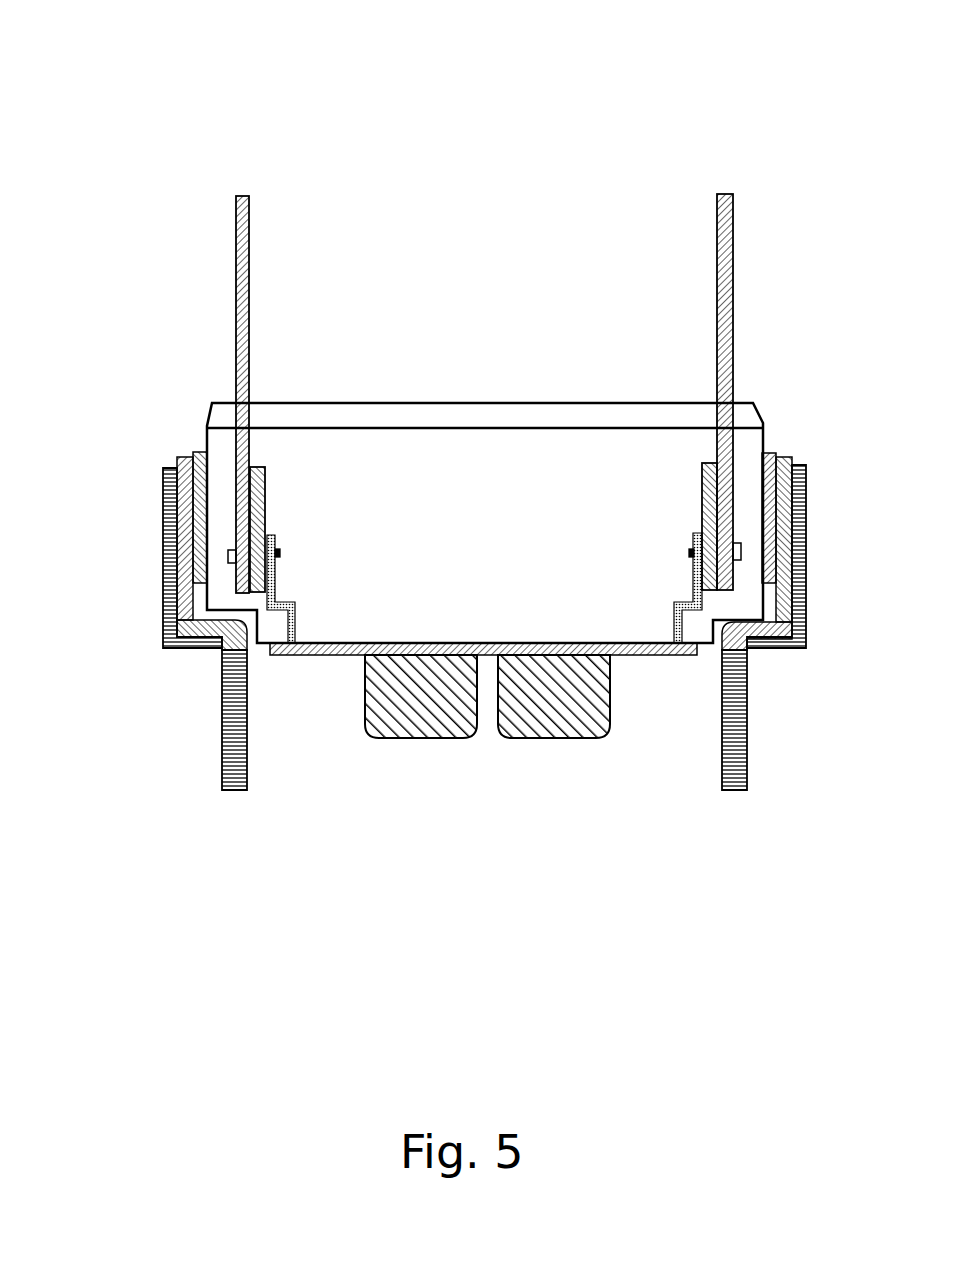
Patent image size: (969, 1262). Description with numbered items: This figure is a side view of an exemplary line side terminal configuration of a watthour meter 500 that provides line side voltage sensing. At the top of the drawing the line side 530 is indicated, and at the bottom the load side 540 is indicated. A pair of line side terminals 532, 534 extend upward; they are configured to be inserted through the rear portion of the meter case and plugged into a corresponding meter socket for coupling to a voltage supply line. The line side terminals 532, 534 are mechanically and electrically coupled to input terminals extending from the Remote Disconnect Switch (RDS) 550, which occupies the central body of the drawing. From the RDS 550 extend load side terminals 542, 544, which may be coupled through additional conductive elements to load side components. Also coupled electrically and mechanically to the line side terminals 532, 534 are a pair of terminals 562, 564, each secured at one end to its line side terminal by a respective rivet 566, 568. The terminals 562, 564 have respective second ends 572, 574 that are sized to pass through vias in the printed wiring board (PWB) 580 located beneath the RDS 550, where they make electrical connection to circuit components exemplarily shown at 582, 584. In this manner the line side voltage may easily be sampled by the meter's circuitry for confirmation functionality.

The meter 500 is at (222, 918).
The line side 530 is at (502, 75).
The load side 540 is at (486, 1040).
The Remote Disconnect Switch (RDS) 550 is at (502, 535).
The line side terminal 532 is at (235, 315).
The line side terminal 534 is at (735, 293).
The terminal 562 is at (295, 602).
The terminal 564 is at (674, 603).
The rivet 566 is at (277, 553).
The rivet 568 is at (693, 553).
The second end 572 is at (290, 657).
The second end 574 is at (680, 657).
The printed wiring board (PWB) 580 is at (635, 657).
The circuit component 582 is at (432, 738).
The circuit component 584 is at (583, 738).
The load side terminal 542 is at (222, 725).
The load side terminal 544 is at (747, 728).